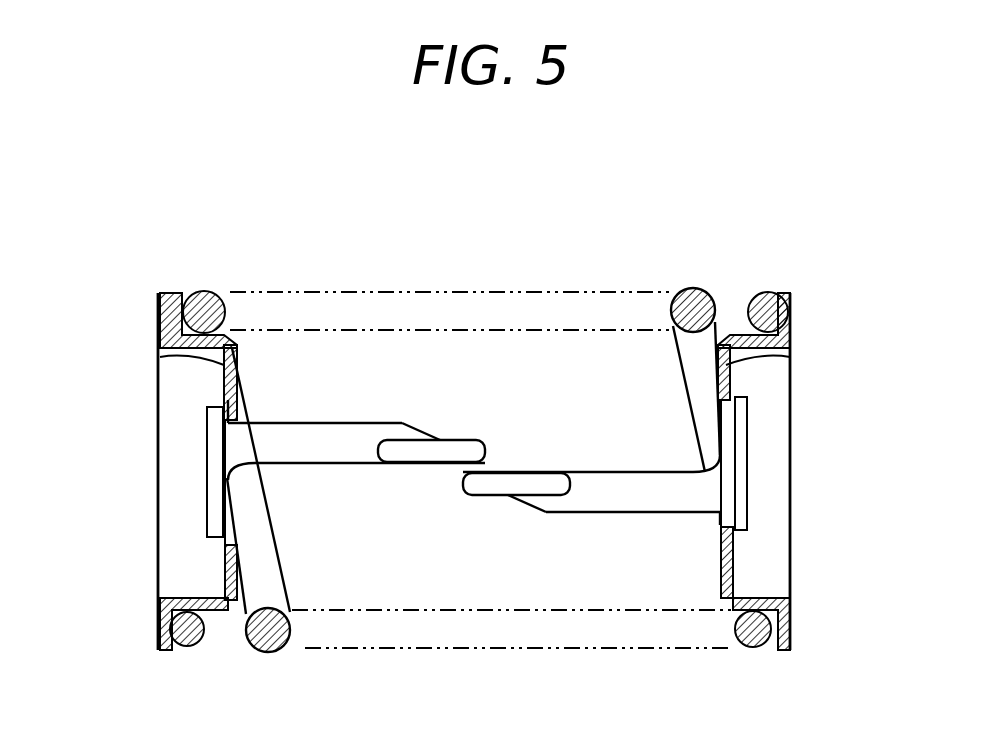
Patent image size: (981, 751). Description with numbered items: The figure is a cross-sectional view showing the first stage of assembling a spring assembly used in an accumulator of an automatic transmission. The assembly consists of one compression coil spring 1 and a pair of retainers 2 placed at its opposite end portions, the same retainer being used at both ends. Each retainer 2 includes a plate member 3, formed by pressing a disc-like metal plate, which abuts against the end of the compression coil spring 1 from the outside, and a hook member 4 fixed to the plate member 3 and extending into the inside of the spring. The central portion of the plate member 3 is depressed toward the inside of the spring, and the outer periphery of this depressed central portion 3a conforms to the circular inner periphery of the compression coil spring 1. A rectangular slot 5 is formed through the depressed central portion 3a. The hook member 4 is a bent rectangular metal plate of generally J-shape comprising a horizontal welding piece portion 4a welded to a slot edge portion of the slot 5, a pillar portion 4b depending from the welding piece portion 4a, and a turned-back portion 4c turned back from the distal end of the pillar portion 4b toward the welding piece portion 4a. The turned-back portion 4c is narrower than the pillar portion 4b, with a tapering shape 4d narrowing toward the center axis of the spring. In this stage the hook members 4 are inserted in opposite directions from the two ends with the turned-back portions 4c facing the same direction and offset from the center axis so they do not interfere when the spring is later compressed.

The compression coil spring 1 is at (590, 302).
The retainer 2 is at (114, 437).
The plate member 3 is at (146, 302).
The depressed central portion 3a is at (160, 360).
The hook member 4 is at (291, 410).
The welding piece portion 4a is at (207, 515).
The pillar portion 4b is at (346, 437).
The turned-back portion 4c is at (465, 447).
The tapering shape 4d is at (418, 440).
The slot 5 is at (228, 523).